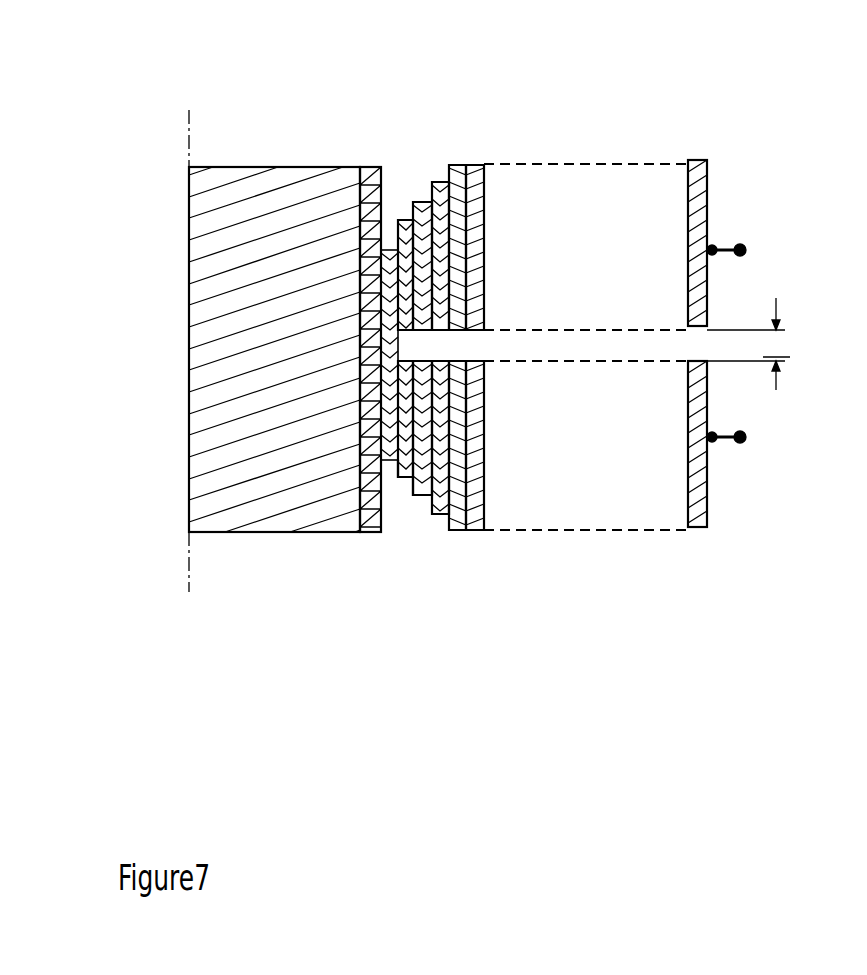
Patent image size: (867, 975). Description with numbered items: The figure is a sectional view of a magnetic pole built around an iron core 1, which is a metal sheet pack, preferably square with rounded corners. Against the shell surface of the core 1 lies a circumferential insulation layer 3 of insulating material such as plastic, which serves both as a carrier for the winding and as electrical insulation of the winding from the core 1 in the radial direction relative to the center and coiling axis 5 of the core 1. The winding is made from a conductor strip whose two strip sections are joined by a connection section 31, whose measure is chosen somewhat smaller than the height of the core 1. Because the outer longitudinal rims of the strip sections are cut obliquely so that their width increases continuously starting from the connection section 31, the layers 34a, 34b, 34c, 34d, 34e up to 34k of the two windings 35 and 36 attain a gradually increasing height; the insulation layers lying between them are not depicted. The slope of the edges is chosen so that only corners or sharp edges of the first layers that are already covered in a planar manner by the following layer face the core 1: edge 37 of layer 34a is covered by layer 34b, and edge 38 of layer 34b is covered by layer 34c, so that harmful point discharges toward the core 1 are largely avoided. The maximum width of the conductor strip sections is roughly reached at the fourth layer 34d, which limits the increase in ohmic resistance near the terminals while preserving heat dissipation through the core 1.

The iron core 1 is at (241, 198).
The insulation layer 3 is at (370, 190).
The center and coiling axis 5 is at (189, 129).
The connection section 31 is at (389, 393).
The first layer 34a is at (407, 298).
The second layer 34b is at (424, 286).
The third layer 34c is at (441, 260).
The fourth layer 34d is at (456, 515).
The fifth layer 34e is at (475, 507).
The last layer 34k is at (697, 496).
The winding 35 is at (617, 496).
The winding 36 is at (616, 208).
The edge 37 is at (398, 468).
The edge 38 is at (414, 487).